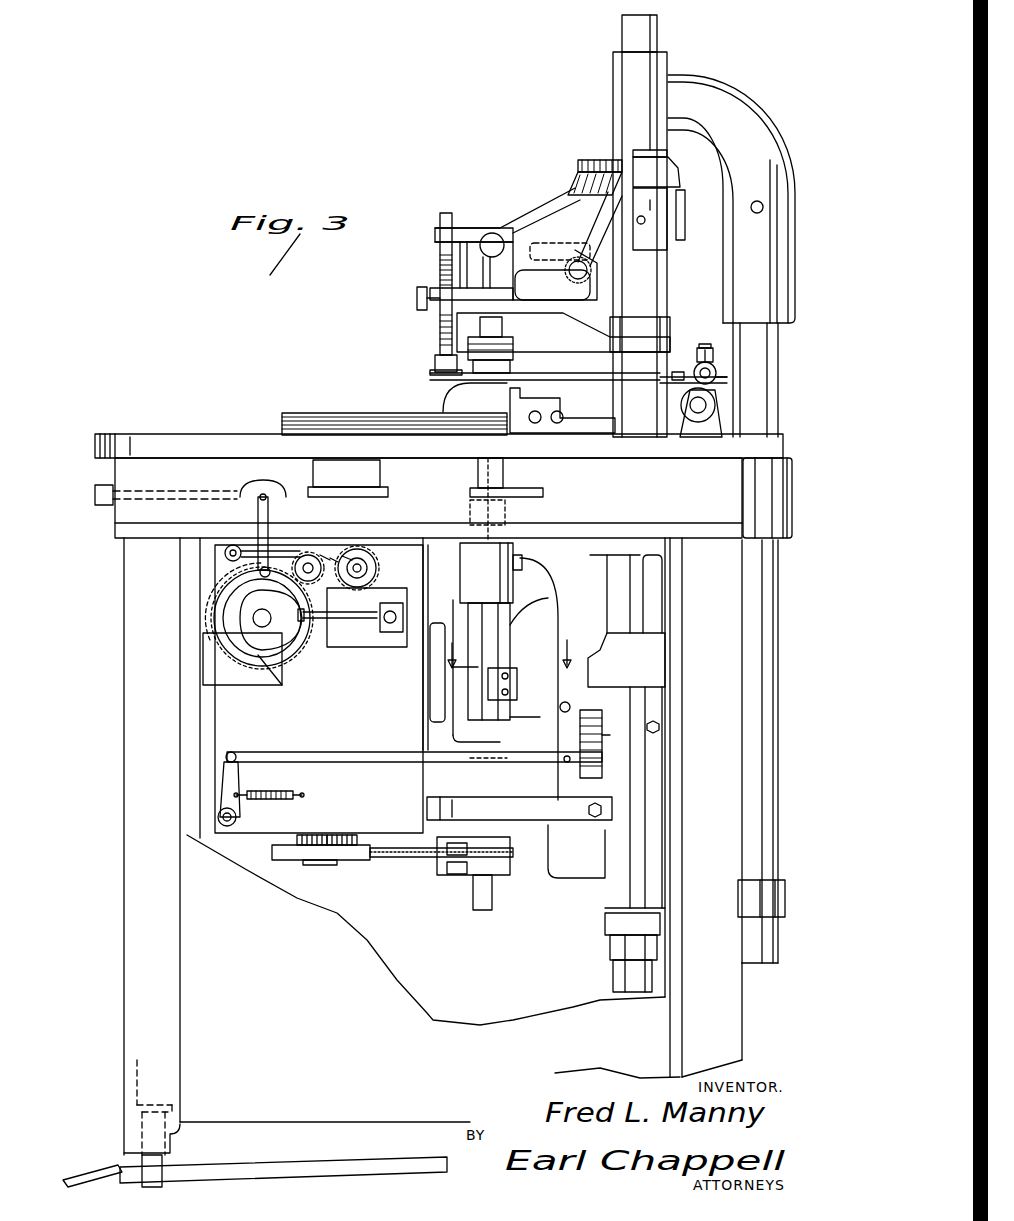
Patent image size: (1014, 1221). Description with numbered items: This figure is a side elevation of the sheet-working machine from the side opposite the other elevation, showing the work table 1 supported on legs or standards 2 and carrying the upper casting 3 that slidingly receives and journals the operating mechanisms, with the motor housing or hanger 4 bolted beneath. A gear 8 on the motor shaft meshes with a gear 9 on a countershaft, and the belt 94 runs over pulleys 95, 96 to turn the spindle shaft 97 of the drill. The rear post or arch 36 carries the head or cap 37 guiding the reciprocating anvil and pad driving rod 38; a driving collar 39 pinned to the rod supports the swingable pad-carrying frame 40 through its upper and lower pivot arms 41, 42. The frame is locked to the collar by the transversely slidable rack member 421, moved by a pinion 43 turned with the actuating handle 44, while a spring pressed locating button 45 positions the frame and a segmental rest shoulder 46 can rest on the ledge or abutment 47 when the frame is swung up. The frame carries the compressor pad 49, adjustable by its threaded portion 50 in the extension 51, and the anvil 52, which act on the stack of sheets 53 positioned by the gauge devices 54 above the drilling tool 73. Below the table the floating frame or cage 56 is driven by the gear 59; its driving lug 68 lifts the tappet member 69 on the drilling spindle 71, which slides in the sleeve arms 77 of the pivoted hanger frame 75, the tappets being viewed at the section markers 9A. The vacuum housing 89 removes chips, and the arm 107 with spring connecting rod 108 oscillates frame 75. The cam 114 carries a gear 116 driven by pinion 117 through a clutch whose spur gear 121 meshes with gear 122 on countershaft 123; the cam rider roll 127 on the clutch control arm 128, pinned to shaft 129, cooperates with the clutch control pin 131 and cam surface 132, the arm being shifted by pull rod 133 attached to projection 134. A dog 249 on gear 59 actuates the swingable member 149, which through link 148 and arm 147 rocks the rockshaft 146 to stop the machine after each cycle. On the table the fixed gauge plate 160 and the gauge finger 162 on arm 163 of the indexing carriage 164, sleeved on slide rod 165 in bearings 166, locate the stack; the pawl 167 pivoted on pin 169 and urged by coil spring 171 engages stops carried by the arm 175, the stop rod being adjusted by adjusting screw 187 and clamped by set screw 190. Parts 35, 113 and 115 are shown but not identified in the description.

The work table 1 is at (205, 440).
The legs or standards 2 is at (124, 915).
The upper casting 3 is at (170, 468).
The motor housing or hanger 4 is at (245, 716).
The gear 8 is at (320, 834).
The gear 9 is at (350, 834).
The section line 9A is at (512, 644).
The foot pedal 35 is at (95, 1172).
The rear post or arch 36 is at (770, 395).
The head or cap 37 is at (742, 108).
The anvil and pad driving rod 38 is at (657, 30).
The driving collar 39 is at (665, 245).
The pad-carrying frame 40 is at (545, 215).
The upper pivot arm 41 is at (618, 160).
The lower pivot arm 42 is at (650, 338).
The pinion 43 is at (565, 278).
The actuating handle 44 is at (582, 205).
The spring pressed locating button 45 is at (592, 162).
The segmental rest shoulder 46 is at (665, 168).
The ledge or abutment 47 is at (700, 183).
The compressor pad 49 is at (435, 363).
The threaded portion 50 is at (438, 277).
The extension 51 is at (432, 318).
The anvil 52 is at (508, 352).
The stack of sheets 53 is at (297, 412).
The gauge devices 54 is at (535, 411).
The floating frame or cage 56 is at (552, 624).
The gear 59 is at (612, 724).
The driving lug 68 is at (530, 700).
The tappet member 69 is at (512, 680).
The drilling spindle 71 is at (495, 640).
The drilling tool 73 is at (492, 472).
The hanger frame 75 is at (440, 676).
The sleeve arms 77 is at (490, 838).
The housing 89 is at (517, 585).
The belt 94 is at (403, 858).
The pulley 95 is at (352, 860).
The pulley 96 is at (467, 860).
The spindle shaft 97 is at (484, 910).
The arm 107 is at (390, 634).
The spring connecting rod 108 is at (352, 622).
The cam 113 is at (300, 640).
The cam 114 is at (225, 620).
The bracket 115 is at (262, 628).
The gear 116 is at (215, 608).
The pinion 117 is at (352, 542).
The spur gear 121 is at (308, 552).
The gear 122 is at (372, 552).
The countershaft 123 is at (368, 568).
The cam rider roll 127 is at (264, 578).
The clutch control arm 128 is at (250, 550).
The shaft 129 is at (228, 546).
The clutch control pin 131 is at (325, 555).
The cam surface 132 is at (347, 556).
The pull rod 133 is at (95, 494).
The projection 134 is at (268, 494).
The rockshaft 146 is at (226, 826).
The arm 147 is at (222, 790).
The link 148 is at (334, 760).
The swingable member 149 is at (598, 712).
The fixed gauge plate 160 is at (548, 434).
The gauge finger 162 is at (443, 395).
The arm 163 is at (560, 372).
The indexing carriage 164 is at (690, 435).
The slide rod 165 is at (698, 413).
The bearings 166 is at (716, 425).
The pawl 167 is at (678, 372).
The pin 169 is at (655, 345).
The coil spring 171 is at (650, 370).
The arm 175 is at (712, 388).
The adjusting screw 187 is at (716, 373).
The set screw 190 is at (710, 344).
The dog 249 is at (605, 752).
The rack member 421 is at (556, 243).